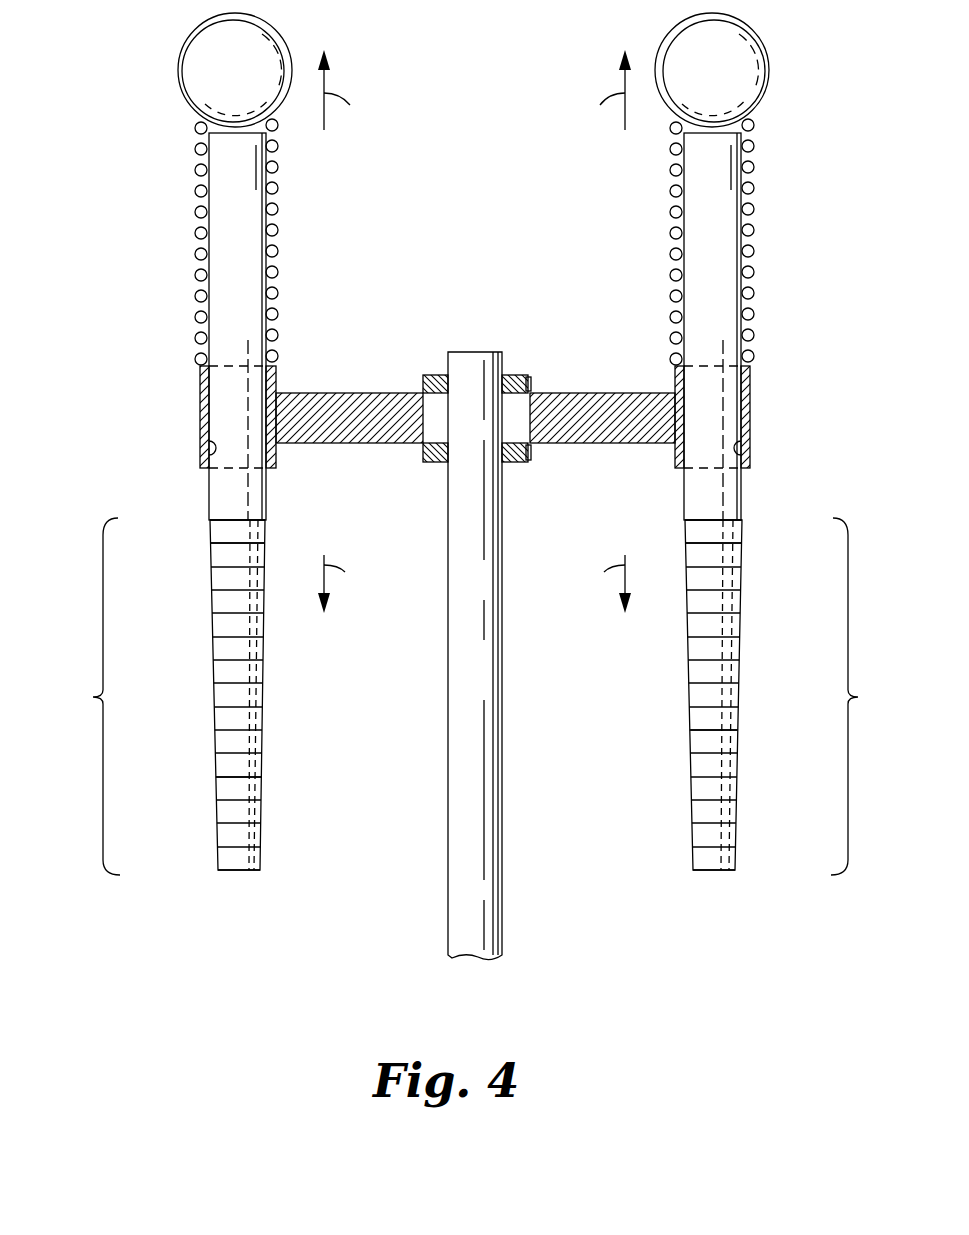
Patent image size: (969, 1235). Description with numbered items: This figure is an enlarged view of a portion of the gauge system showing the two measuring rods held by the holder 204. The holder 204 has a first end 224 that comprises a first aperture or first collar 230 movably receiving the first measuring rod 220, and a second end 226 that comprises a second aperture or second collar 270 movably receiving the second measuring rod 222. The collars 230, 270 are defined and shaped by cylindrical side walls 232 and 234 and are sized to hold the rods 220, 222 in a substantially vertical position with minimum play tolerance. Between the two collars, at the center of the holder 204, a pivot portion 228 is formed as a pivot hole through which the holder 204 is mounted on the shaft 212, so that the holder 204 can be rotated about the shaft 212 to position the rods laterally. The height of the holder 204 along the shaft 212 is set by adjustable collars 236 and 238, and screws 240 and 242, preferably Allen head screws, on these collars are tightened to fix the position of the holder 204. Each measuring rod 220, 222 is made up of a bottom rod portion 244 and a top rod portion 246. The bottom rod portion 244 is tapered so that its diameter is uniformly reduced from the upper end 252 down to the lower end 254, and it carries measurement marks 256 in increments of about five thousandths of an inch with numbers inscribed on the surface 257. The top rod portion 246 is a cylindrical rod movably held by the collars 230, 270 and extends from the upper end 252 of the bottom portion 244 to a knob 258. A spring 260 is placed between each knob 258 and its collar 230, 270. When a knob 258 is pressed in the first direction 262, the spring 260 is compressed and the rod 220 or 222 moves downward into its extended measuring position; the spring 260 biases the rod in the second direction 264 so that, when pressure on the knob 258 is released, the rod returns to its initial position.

The holder 204 is at (533, 362).
The shaft 212 is at (503, 652).
The first measuring rod 220 is at (210, 652).
The second measuring rod 222 is at (740, 652).
The first end 224 is at (200, 425).
The second end 226 is at (752, 428).
The pivot portion 228 is at (398, 376).
The first collar 230 is at (200, 366).
The cylindrical side wall 232 is at (208, 456).
The cylindrical side wall 234 is at (750, 456).
The adjustable collar 236 is at (513, 367).
The adjustable collar 238 is at (513, 460).
The screw 240 is at (531, 385).
The screw 242 is at (531, 452).
The bottom rod portion 244 is at (480, 696).
The top rod portion 246 is at (172, 215).
The upper end 252 is at (210, 522).
The lower end 254 is at (215, 870).
The measurement marks 256 is at (225, 768).
The surface 257 is at (205, 554).
The knob 258 is at (180, 75).
The spring 260 is at (280, 209).
The first direction 262 is at (474, 584).
The second direction 264 is at (474, 94).
The second collar 270 is at (752, 366).